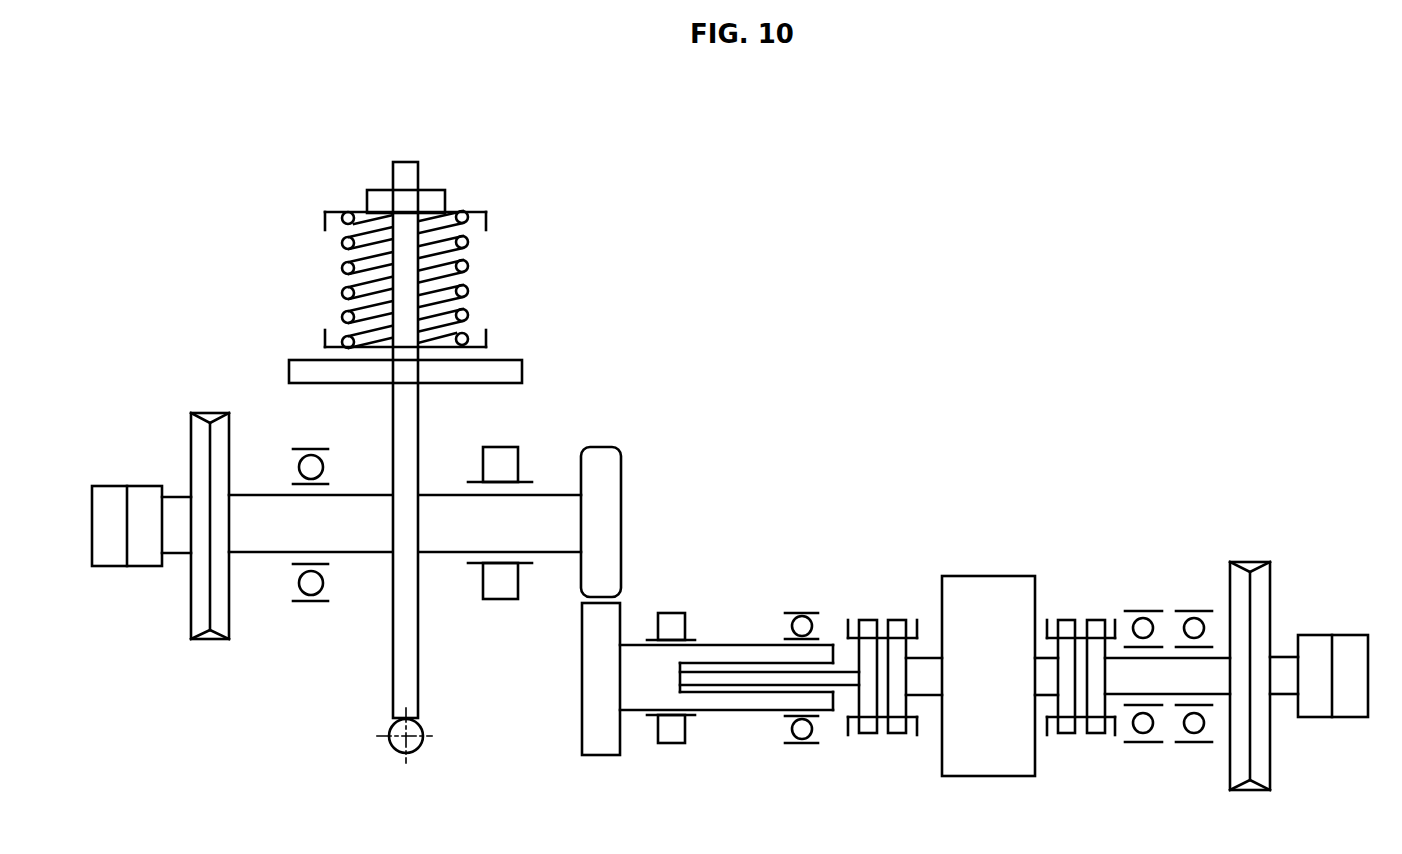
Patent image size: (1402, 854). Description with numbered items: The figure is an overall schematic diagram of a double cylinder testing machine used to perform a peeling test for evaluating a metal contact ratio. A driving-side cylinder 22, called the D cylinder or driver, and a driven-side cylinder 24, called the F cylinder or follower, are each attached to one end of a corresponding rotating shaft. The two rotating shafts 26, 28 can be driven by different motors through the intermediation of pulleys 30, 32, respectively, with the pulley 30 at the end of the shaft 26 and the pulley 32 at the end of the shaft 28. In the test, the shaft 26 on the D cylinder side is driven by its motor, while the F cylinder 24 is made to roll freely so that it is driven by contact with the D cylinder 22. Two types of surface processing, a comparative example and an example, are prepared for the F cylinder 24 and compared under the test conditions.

The driving-side cylinder 22 is at (610, 476).
The driven-side cylinder 24 is at (582, 713).
The rotating shaft 26 is at (552, 505).
The rotating shaft 28 is at (740, 703).
The pulley 30 is at (191, 440).
The pulley 32 is at (1235, 768).